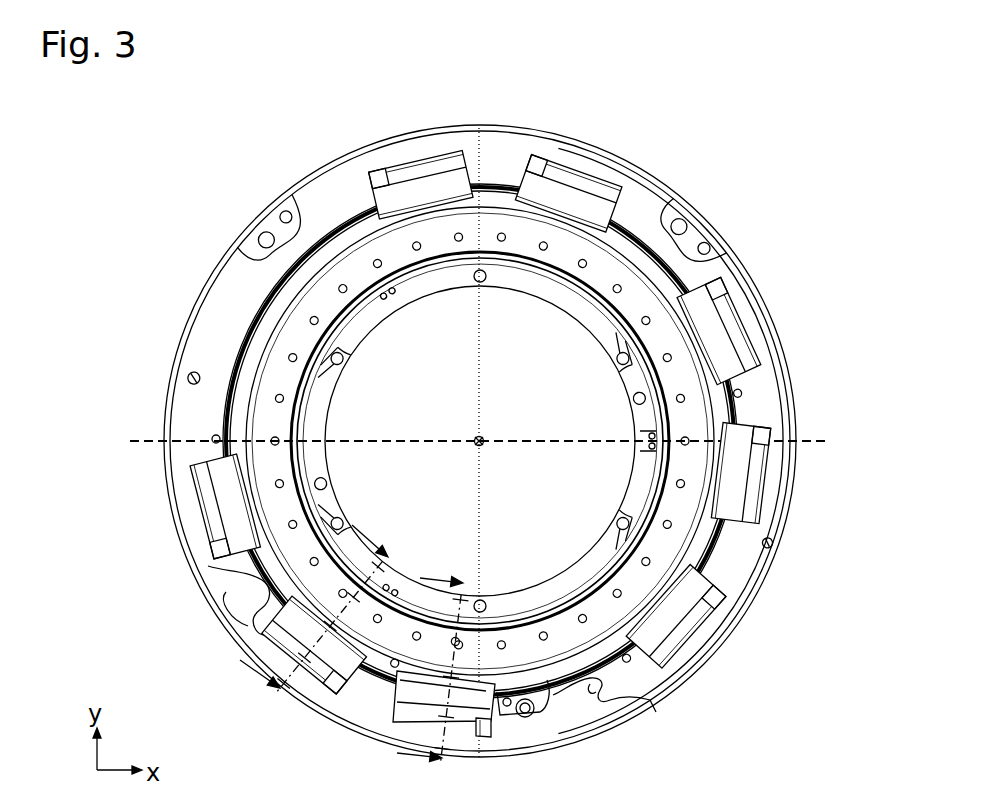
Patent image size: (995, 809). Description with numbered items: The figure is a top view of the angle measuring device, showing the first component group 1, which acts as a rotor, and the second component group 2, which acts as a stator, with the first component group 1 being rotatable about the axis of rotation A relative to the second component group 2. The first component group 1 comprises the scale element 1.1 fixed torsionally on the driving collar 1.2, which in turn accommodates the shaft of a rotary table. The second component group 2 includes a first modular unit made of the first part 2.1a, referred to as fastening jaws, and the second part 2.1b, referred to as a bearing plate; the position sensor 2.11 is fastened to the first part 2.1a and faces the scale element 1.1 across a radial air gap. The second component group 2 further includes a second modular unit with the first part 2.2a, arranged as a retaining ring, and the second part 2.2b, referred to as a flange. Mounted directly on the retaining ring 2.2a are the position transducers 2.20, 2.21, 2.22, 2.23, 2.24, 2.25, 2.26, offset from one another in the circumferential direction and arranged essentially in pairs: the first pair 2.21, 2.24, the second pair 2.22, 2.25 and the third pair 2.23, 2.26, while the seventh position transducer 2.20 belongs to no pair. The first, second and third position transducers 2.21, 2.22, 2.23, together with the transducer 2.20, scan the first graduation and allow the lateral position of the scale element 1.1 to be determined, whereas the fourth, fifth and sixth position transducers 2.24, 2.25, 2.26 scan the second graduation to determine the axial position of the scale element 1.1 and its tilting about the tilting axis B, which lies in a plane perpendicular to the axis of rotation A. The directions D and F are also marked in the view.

The first component group 1 is at (558, 560).
The scale element 1.1 is at (700, 532).
The driving collar 1.2 is at (323, 443).
The second component group 2 is at (147, 426).
The first part 2.1a is at (507, 715).
The second part 2.1b is at (546, 698).
The position sensor 2.11 is at (470, 728).
The seventh position transducer 2.20 is at (690, 628).
The first position transducer 2.21 is at (326, 695).
The second position transducer 2.22 is at (422, 170).
The third position transducer 2.23 is at (733, 312).
The fourth position transducer 2.24 is at (213, 538).
The fifth position transducer 2.25 is at (572, 172).
The sixth position transducer 2.26 is at (758, 478).
The first part 2.2a is at (223, 327).
The second part 2.2b is at (274, 225).
The axis of rotation A is at (484, 441).
The tilting axis B is at (810, 442).
The direction D is at (433, 669).
The direction F is at (308, 602).